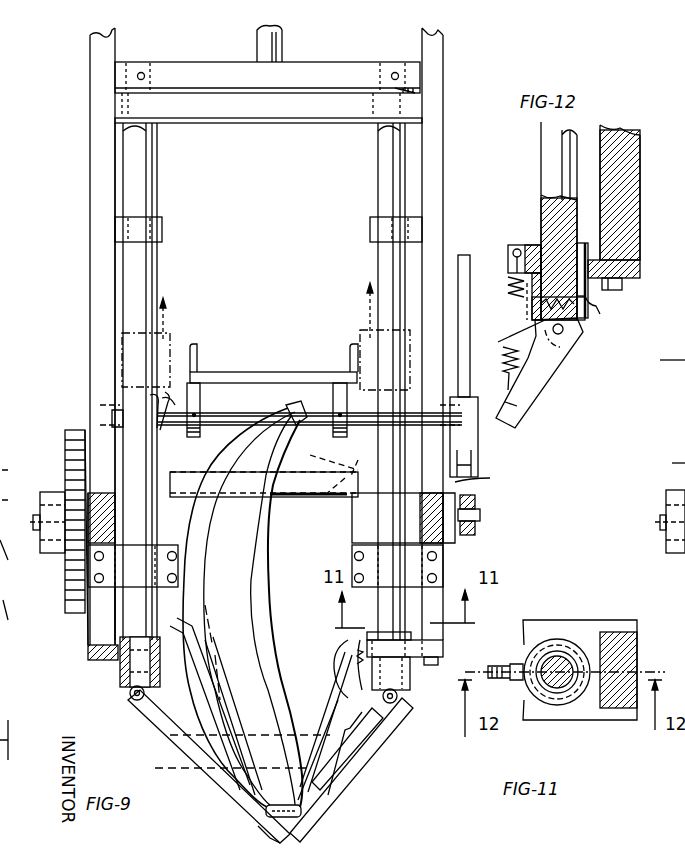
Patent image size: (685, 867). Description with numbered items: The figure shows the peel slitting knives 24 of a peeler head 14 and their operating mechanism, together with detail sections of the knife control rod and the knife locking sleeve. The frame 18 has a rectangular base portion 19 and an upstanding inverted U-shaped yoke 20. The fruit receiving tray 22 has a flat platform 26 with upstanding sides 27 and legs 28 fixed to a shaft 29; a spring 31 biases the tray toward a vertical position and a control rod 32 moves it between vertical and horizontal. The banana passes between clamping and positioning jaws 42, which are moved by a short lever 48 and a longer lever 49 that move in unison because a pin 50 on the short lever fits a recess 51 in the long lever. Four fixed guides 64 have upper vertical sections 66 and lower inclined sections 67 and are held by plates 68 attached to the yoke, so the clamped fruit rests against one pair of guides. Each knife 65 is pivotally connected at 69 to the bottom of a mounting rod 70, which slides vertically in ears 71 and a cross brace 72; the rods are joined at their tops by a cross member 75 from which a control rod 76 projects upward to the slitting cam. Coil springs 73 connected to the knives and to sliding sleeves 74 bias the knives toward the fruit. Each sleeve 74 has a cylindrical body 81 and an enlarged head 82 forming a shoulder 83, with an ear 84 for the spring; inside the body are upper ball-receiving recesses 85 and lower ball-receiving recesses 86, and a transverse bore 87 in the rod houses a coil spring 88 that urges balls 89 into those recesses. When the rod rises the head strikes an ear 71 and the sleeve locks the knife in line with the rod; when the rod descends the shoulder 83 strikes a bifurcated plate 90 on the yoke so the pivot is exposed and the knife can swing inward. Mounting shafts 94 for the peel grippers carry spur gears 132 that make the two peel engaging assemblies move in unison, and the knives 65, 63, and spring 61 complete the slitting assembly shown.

In FIG. 9, the peeler head 14 is at (81, 354).
In FIG. 12, the peeler head 14 is at (672, 356).
In FIG. 9, the frame 18 is at (81, 270).
In FIG. 12, the frame 18 is at (675, 294).
In FIG. 9, the base portion 19 is at (470, 545).
In FIG. 9, the yoke 20 is at (445, 166).
In FIG. 12, the yoke 20 is at (632, 160).
In FIG. 11, the yoke 20 is at (632, 664).
In FIG. 9, the fruit receiving tray 22 is at (207, 357).
In FIG. 9, the peel slitting knives 24 is at (391, 750).
In FIG. 9, the platform 26 is at (290, 375).
In FIG. 9, the upstanding sides 27 is at (200, 348).
In FIG. 9, the legs 28 is at (202, 405).
In FIG. 9, the shaft 29 is at (258, 412).
In FIG. 9, the spring 31 is at (160, 440).
In FIG. 9, the control rod 32 is at (460, 283).
In FIG. 9, the clamping and positioning jaws 42 is at (340, 497).
In FIG. 9, the lever 48 is at (488, 471).
In FIG. 9, the lever 49 is at (478, 530).
In FIG. 9, the pin 50 is at (482, 516).
In FIG. 9, the recess 51 is at (478, 500).
In FIG. 9, the spring 61 is at (262, 622).
In FIG. 9, the link arm 63 is at (342, 786).
In FIG. 9, the fixed guides 64 is at (207, 712).
In FIG. 9, the knives 65 is at (172, 745).
In FIG. 12, the knives 65 is at (535, 390).
In FIG. 9, the upper vertical sections 66 is at (355, 535).
In FIG. 9, the lower inclined sections 67 is at (212, 730).
In FIG. 9, the plates 68 is at (458, 568).
In FIG. 9, the pivotal connection 69 is at (130, 702).
In FIG. 12, the pivotal connection 69 is at (565, 340).
In FIG. 9, the mounting rod 70 is at (150, 200).
In FIG. 12, the mounting rod 70 is at (541, 186).
In FIG. 11, the mounting rod 70 is at (550, 655).
In FIG. 9, the ears 71 is at (165, 228).
In FIG. 9, the cross brace 72 is at (262, 122).
In FIG. 9, the coil springs 73 is at (178, 720).
In FIG. 12, the coil springs 73 is at (508, 305).
In FIG. 9, the sliding sleeves 74 is at (120, 678).
In FIG. 12, the sliding sleeves 74 is at (586, 305).
In FIG. 11, the sliding sleeves 74 is at (565, 650).
In FIG. 9, the cross member 75 is at (340, 62).
In FIG. 9, the control rod 76 is at (278, 46).
In FIG. 9, the cylindrical body 81 is at (440, 662).
In FIG. 12, the cylindrical body 81 is at (590, 332).
In FIG. 11, the cylindrical body 81 is at (490, 665).
In FIG. 9, the enlarged head 82 is at (366, 636).
In FIG. 12, the enlarged head 82 is at (588, 250).
In FIG. 11, the enlarged head 82 is at (570, 715).
In FIG. 12, the shoulder 83 is at (600, 252).
In FIG. 12, the ear 84 is at (508, 246).
In FIG. 12, the upper ball-receiving recesses 85 is at (513, 254).
In FIG. 12, the lower ball-receiving recesses 86 is at (508, 333).
In FIG. 12, the transverse bore 87 is at (595, 298).
In FIG. 12, the coil spring 88 is at (503, 350).
In FIG. 12, the balls 89 is at (508, 288).
In FIG. 9, the bifurcated plate 90 is at (86, 655).
In FIG. 11, the bifurcated plate 90 is at (598, 622).
In FIG. 9, the mounting shafts 94 is at (33, 522).
In FIG. 12, the mounting shafts 94 is at (660, 522).
In FIG. 9, the spur gears 132 is at (62, 460).
In FIG. 12, the spur gears 132 is at (658, 460).